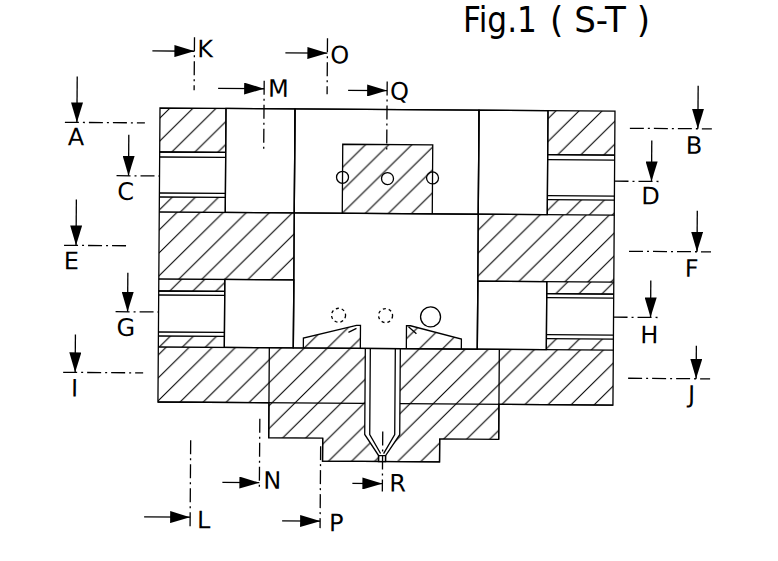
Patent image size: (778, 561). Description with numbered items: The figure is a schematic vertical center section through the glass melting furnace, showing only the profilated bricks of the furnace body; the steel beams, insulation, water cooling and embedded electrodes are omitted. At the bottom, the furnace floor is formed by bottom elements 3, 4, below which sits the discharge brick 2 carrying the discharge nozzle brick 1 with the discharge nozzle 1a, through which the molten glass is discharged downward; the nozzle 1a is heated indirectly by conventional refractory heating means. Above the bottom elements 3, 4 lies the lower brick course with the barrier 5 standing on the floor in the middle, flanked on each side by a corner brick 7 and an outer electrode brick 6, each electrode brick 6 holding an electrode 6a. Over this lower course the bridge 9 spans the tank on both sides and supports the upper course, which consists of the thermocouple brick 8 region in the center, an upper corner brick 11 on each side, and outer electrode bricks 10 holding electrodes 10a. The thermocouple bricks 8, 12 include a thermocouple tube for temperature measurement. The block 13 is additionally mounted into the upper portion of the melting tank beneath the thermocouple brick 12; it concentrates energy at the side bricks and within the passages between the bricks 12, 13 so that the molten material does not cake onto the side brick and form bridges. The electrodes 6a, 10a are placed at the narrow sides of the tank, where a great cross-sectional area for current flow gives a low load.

The discharge nozzle brick 1 is at (443, 456).
The discharge nozzle 1a is at (380, 457).
The discharge brick 2 is at (483, 440).
The bottom element 3 is at (184, 396).
The bottom element 4 is at (483, 393).
The barrier 5 is at (380, 333).
The electrode brick 6 is at (206, 327).
The electrode 6a is at (177, 298).
The corner brick 7 is at (270, 327).
The thermocouple brick 8 is at (414, 262).
The bridge 9 is at (283, 234).
The electrode brick 10 is at (216, 191).
The electrode 10a is at (187, 115).
The corner brick 11 is at (280, 191).
The thermocouple brick 12 is at (331, 191).
The block 13 is at (418, 164).